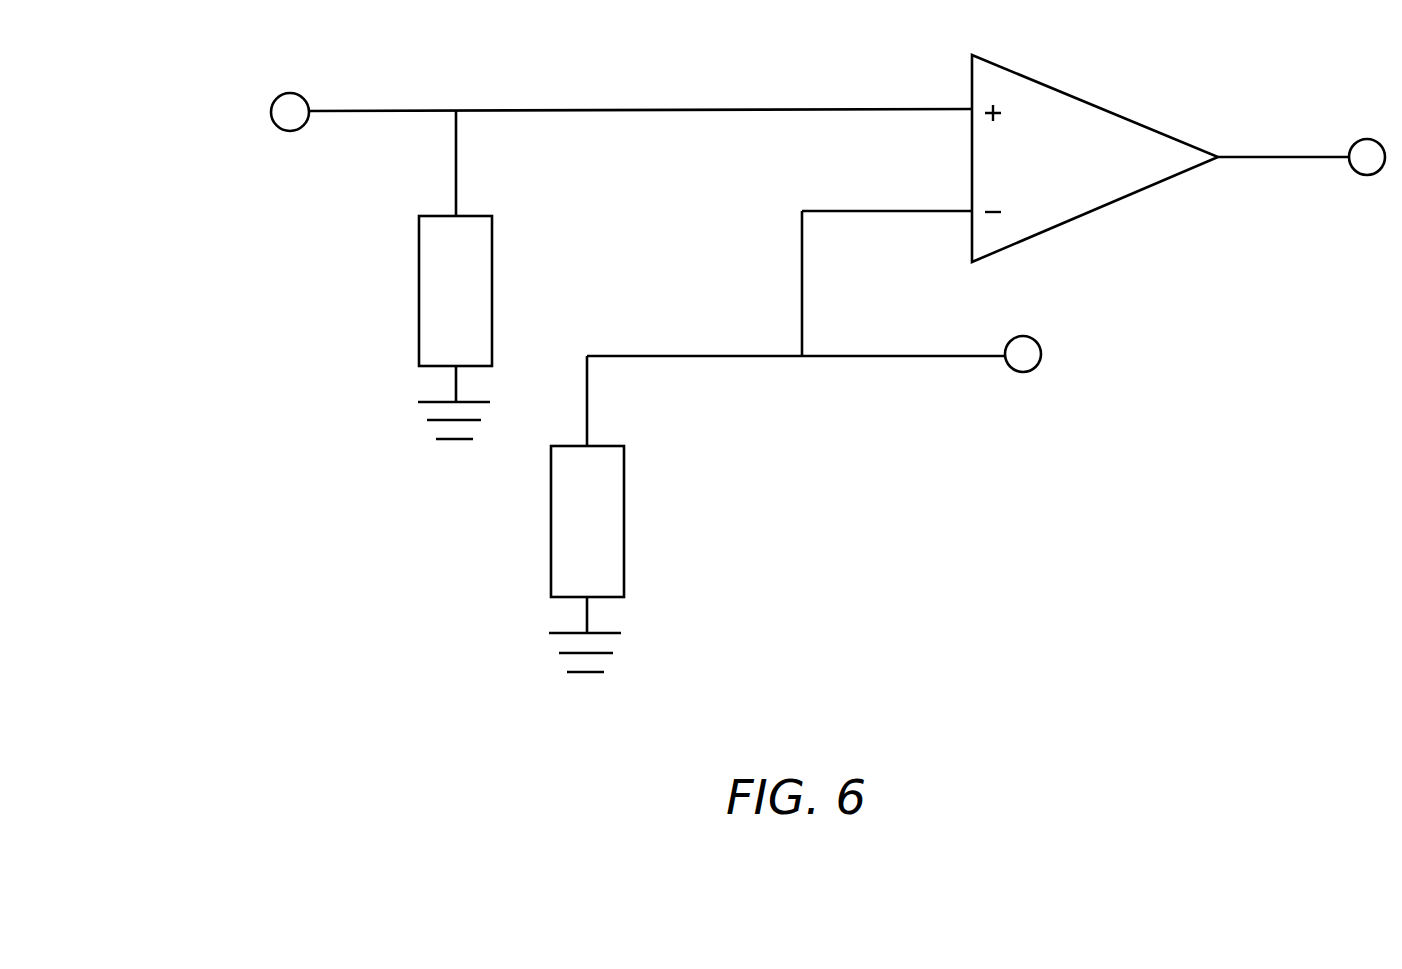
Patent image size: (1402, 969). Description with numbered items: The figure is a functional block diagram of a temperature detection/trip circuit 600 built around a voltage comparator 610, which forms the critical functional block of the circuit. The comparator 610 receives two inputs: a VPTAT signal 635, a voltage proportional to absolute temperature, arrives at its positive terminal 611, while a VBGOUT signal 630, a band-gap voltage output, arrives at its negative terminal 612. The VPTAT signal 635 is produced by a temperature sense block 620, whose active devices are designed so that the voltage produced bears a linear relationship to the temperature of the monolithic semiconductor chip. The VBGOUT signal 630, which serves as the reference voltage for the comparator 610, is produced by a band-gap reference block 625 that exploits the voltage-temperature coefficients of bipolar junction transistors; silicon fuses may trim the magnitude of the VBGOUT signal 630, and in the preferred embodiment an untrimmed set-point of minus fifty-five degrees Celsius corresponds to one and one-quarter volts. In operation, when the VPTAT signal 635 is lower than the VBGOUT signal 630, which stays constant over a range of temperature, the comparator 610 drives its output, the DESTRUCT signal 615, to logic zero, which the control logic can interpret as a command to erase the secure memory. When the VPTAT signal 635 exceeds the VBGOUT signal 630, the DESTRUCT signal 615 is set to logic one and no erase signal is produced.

The temperature detection/trip circuit 600 is at (993, 548).
The voltage comparator 610 is at (1055, 85).
The positive terminal 611 is at (970, 114).
The negative terminal 612 is at (970, 214).
The DESTRUCT signal 615 is at (1270, 155).
The temperature sense block 620 is at (492, 300).
The band-gap reference block 625 is at (624, 525).
The VBGOUT signal 630 is at (1036, 368).
The VPTAT signal 635 is at (290, 93).